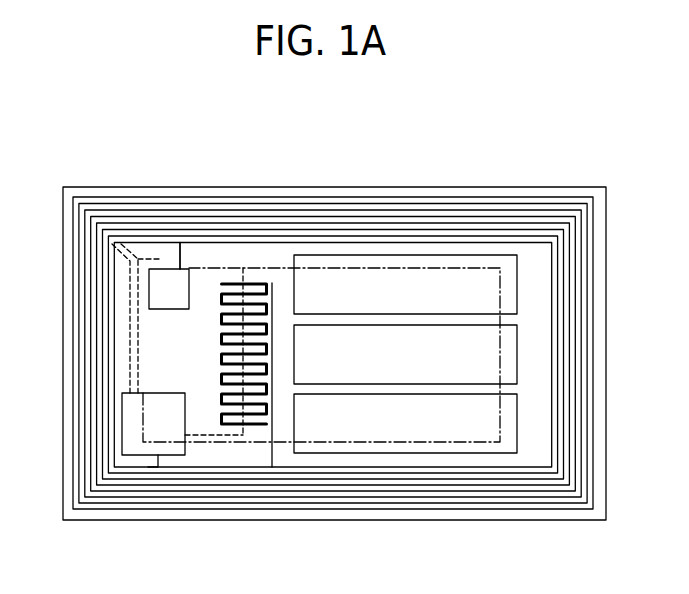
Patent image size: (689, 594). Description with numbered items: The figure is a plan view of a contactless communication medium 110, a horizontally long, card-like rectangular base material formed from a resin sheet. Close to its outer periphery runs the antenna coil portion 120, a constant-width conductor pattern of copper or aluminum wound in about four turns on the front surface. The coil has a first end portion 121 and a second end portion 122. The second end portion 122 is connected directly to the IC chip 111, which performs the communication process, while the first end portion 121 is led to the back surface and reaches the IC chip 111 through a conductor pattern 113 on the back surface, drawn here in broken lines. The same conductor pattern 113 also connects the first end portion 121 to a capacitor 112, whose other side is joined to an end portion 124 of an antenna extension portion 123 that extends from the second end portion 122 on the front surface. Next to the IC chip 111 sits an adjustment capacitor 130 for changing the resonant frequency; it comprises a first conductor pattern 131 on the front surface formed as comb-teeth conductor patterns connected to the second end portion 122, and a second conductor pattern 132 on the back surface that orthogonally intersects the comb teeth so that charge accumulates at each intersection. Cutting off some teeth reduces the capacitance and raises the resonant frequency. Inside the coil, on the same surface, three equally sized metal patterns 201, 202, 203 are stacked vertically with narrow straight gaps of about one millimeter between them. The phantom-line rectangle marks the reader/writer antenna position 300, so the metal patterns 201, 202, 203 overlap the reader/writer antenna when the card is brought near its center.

The contactless communication medium 110 is at (456, 522).
The antenna coil portion 120 is at (330, 310).
The first end portion 121 is at (74, 205).
The second end portion 122 is at (178, 257).
The antenna extension portion 123 is at (373, 247).
The end portion 124 is at (150, 463).
The IC chip 111 is at (170, 309).
The capacitor 112 is at (130, 445).
The conductor pattern 113 is at (125, 334).
The adjustment capacitor 130 is at (268, 355).
The first conductor pattern 131 is at (258, 283).
The second conductor pattern 132 is at (243, 272).
The metal pattern 201 is at (508, 285).
The metal pattern 202 is at (508, 356).
The metal pattern 203 is at (508, 426).
The reader/writer antenna position 300 is at (367, 444).